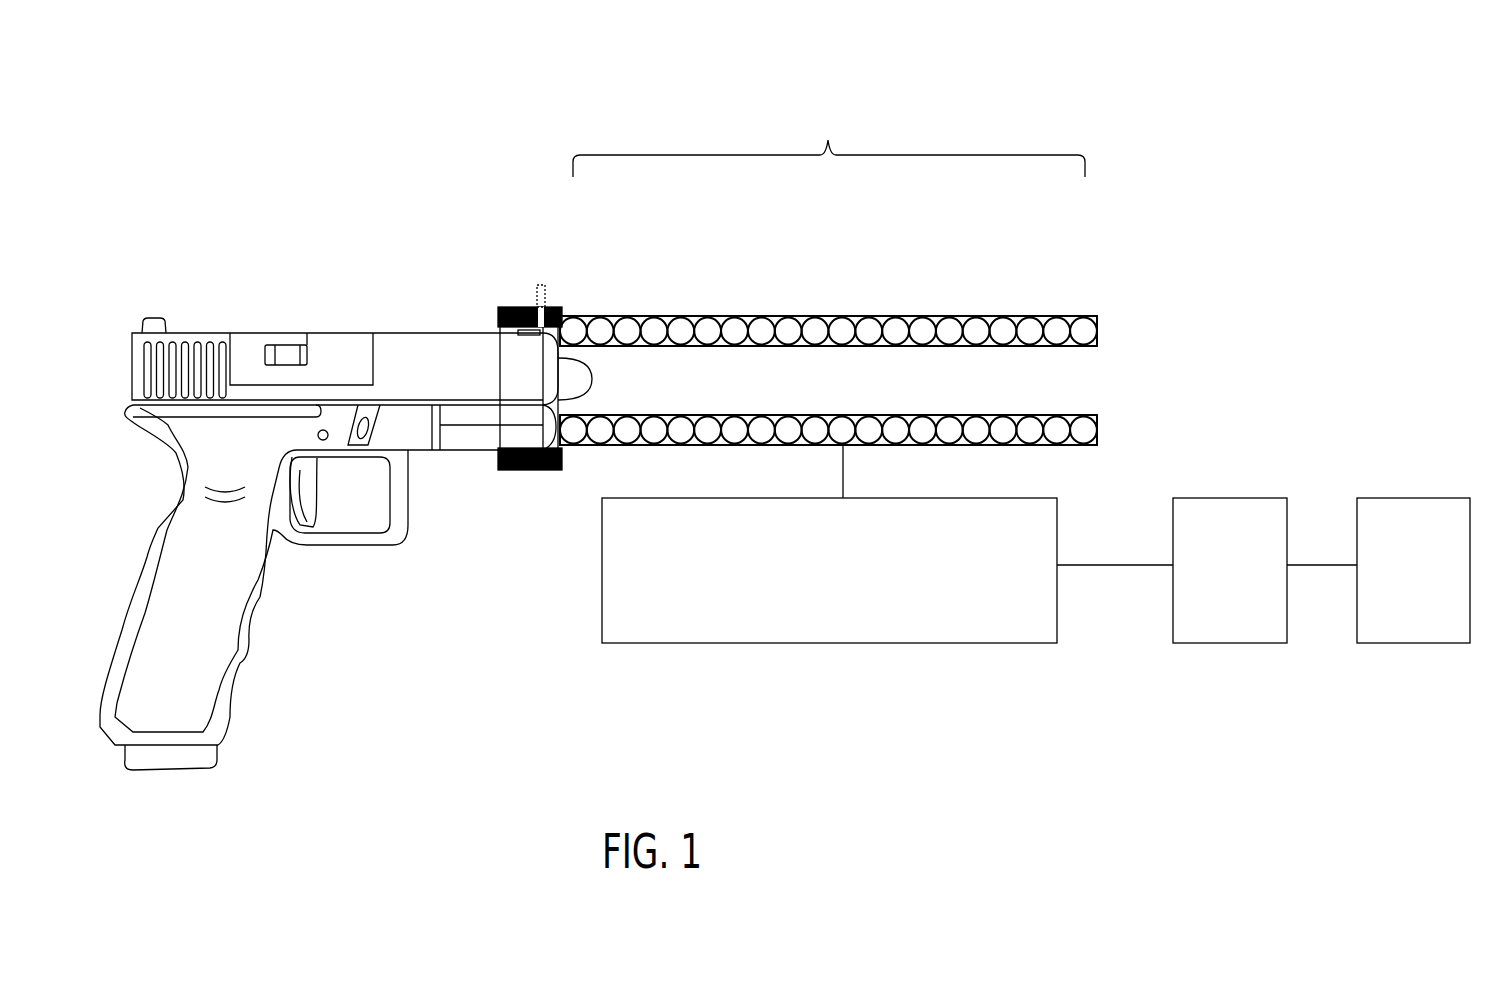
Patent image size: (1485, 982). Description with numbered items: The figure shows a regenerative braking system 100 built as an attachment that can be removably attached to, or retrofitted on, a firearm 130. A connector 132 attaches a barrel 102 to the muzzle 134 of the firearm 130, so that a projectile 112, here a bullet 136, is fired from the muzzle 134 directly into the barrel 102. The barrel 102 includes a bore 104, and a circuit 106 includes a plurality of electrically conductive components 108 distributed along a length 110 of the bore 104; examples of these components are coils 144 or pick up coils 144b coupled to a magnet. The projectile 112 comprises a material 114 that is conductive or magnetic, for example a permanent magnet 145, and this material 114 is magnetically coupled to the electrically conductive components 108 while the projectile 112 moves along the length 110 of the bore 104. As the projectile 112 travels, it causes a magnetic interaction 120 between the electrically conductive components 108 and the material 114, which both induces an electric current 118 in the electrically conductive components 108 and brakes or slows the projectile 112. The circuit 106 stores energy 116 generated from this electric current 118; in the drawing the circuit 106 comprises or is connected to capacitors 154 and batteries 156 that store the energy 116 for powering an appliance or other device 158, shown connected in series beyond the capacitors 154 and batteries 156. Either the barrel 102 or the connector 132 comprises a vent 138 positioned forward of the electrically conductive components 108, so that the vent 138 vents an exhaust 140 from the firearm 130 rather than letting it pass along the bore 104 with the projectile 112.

The regenerative braking system 100 is at (341, 132).
The firearm 130 is at (158, 268).
The muzzle 134 is at (436, 312).
The connector 132 is at (518, 470).
The vent 138 is at (543, 307).
The exhaust 140 is at (540, 307).
The length of the bore 110 is at (829, 140).
The barrel 102 is at (955, 306).
The bore 104 is at (828, 404).
The electrically conductive components 108 is at (880, 310).
The coils 144 is at (828, 331).
The pick up coils 144b is at (828, 331).
The projectile 112 is at (592, 383).
The material 114 is at (575, 379).
The bullet 136 is at (575, 379).
The permanent magnet 145 is at (575, 379).
The magnetic interaction 120 is at (666, 398).
The electric current 118 is at (840, 463).
The circuit 106 is at (979, 613).
The energy 116 is at (829, 613).
The capacitors 154 is at (1002, 618).
The batteries 156 is at (1218, 645).
The appliance or other device 158 is at (1397, 645).